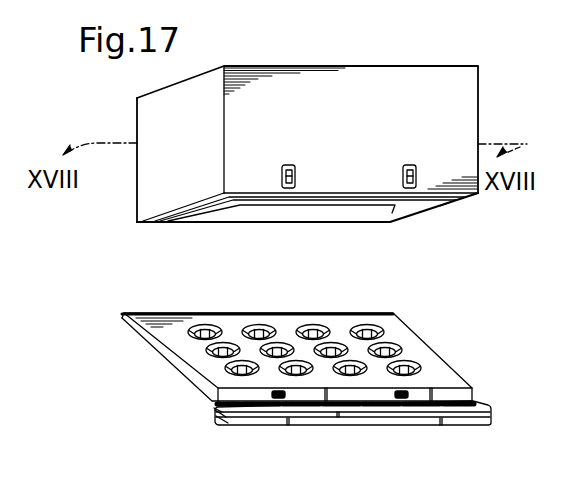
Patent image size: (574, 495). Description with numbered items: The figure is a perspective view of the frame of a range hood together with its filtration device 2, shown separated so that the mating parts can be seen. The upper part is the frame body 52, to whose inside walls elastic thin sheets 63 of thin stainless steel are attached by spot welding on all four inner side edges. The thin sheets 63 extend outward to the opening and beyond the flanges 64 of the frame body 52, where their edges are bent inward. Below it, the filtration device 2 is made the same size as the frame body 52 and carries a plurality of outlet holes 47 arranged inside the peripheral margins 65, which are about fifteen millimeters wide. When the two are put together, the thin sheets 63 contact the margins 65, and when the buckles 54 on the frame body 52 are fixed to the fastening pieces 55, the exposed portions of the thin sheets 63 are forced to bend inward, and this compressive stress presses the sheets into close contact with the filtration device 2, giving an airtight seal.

The filtration device 2 is at (455, 371).
The outlet holes 47 is at (374, 332).
The frame body 52 is at (479, 97).
The buckles 54 is at (282, 176).
The fastening pieces 55 is at (265, 404).
The elastic thin sheets 63 is at (285, 213).
The flanges 64 is at (152, 223).
The margins 65 is at (413, 350).